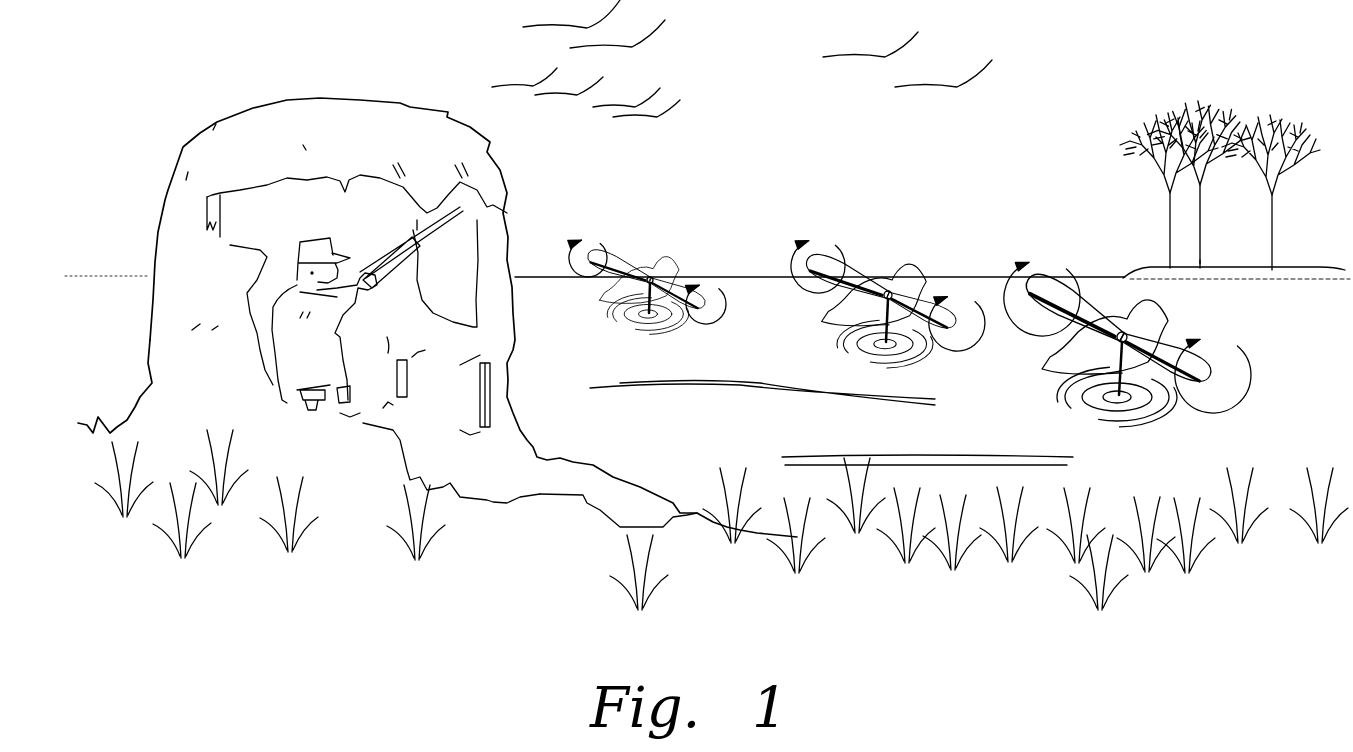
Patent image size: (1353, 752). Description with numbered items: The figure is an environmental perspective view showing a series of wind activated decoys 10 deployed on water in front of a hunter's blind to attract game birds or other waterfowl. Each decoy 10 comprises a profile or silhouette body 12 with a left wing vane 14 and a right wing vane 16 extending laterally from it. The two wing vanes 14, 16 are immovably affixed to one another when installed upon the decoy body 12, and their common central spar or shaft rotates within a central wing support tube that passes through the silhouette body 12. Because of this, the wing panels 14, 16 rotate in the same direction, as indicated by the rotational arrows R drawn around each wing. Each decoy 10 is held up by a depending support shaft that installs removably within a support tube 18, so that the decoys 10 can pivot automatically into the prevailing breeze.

The decoy 10 is at (688, 242).
The silhouette body 12 is at (607, 303).
The left wing vane 14 is at (633, 252).
The right wing vane 16 is at (680, 273).
The support tube 18 is at (655, 312).
The rotational arrows R is at (573, 255).